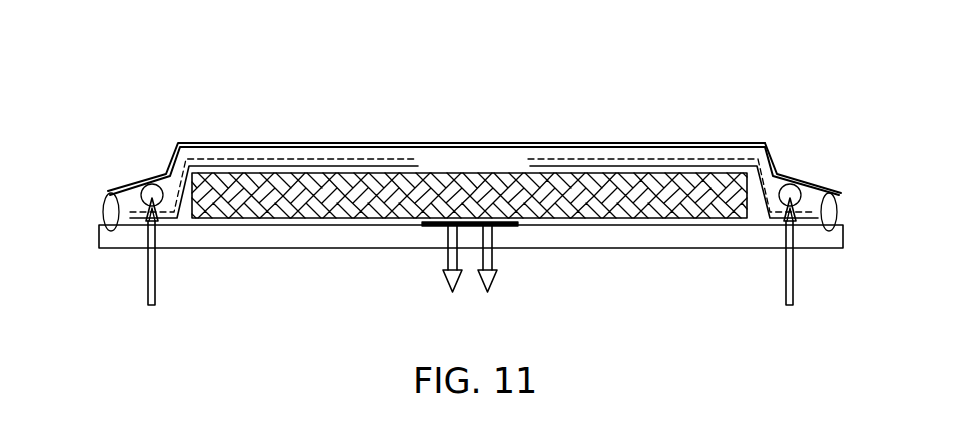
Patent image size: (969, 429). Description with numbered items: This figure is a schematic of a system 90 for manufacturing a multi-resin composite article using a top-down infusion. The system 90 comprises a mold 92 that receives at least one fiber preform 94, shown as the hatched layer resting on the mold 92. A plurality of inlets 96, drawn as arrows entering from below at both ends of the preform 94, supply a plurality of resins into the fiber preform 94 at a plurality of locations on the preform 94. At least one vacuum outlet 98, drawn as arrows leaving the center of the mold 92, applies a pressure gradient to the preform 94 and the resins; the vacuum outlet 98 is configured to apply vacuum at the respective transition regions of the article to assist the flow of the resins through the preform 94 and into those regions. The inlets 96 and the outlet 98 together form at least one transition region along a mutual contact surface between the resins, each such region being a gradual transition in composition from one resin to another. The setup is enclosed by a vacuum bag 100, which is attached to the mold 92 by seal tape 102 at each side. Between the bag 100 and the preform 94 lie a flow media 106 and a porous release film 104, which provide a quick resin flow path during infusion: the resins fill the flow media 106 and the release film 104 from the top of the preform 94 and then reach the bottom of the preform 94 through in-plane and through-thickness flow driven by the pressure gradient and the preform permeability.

The system 90 is at (742, 64).
The mold 92 is at (99, 238).
The fiber preform 94 is at (457, 173).
The inlets 96 is at (151, 300).
The vacuum outlet 98 is at (468, 240).
The vacuum bag 100 is at (293, 146).
The seal tape 102 is at (105, 208).
The release film 104 is at (557, 166).
The flow media 106 is at (657, 159).